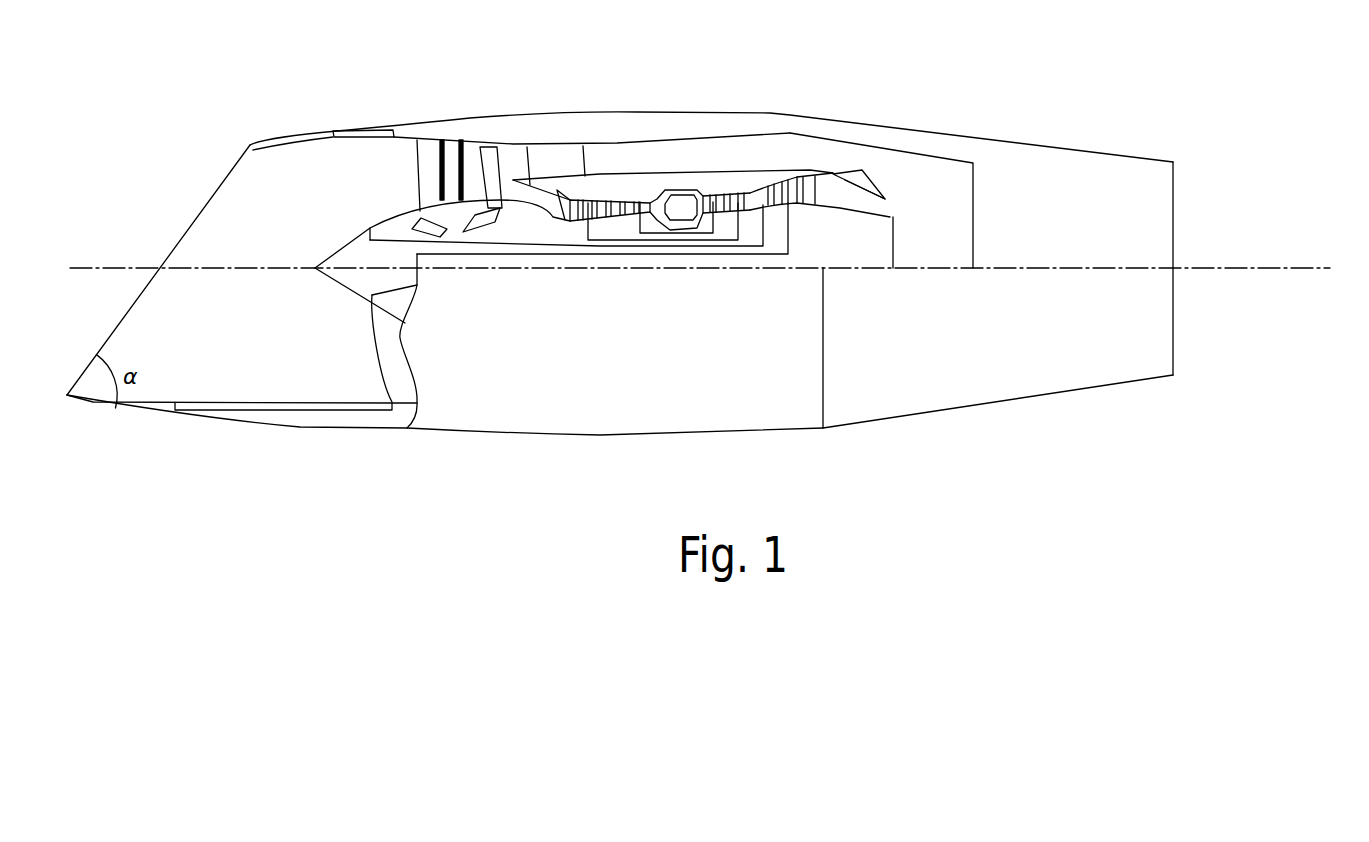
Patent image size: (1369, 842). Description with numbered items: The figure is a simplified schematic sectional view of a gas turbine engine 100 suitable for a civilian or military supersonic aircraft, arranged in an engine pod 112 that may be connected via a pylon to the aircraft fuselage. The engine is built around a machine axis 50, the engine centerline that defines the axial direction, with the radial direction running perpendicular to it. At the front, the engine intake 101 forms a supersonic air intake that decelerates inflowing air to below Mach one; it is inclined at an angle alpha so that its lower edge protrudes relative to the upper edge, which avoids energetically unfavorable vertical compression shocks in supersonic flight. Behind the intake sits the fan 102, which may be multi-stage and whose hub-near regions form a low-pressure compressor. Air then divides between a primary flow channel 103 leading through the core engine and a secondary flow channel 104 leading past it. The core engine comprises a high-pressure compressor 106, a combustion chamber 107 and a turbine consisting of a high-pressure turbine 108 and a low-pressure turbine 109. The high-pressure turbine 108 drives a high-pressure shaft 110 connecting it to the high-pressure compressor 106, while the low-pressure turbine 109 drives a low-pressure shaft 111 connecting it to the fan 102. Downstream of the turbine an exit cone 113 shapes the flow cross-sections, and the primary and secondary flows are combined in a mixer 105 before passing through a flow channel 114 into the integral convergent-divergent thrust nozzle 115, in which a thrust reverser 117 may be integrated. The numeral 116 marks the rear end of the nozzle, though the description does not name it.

The machine axis 50 is at (240, 270).
The gas turbine engine 100 is at (530, 88).
The engine intake 101 is at (290, 143).
The fan 102 is at (433, 137).
The primary flow channel 103 is at (570, 222).
The secondary flow channel 104 is at (617, 160).
The mixer 105 is at (858, 172).
The high-pressure compressor 106 is at (617, 223).
The combustion chamber 107 is at (678, 188).
The high-pressure turbine 108 is at (730, 213).
The low-pressure turbine 109 is at (777, 199).
The high-pressure shaft 110 is at (650, 233).
The low-pressure shaft 111 is at (533, 252).
The engine pod 112 is at (560, 438).
The exit cone 113 is at (888, 205).
The flow channel 114 is at (958, 170).
The thrust nozzle 115 is at (1065, 147).
The outlet 116 is at (1177, 232).
The thrust reverser 117 is at (902, 425).